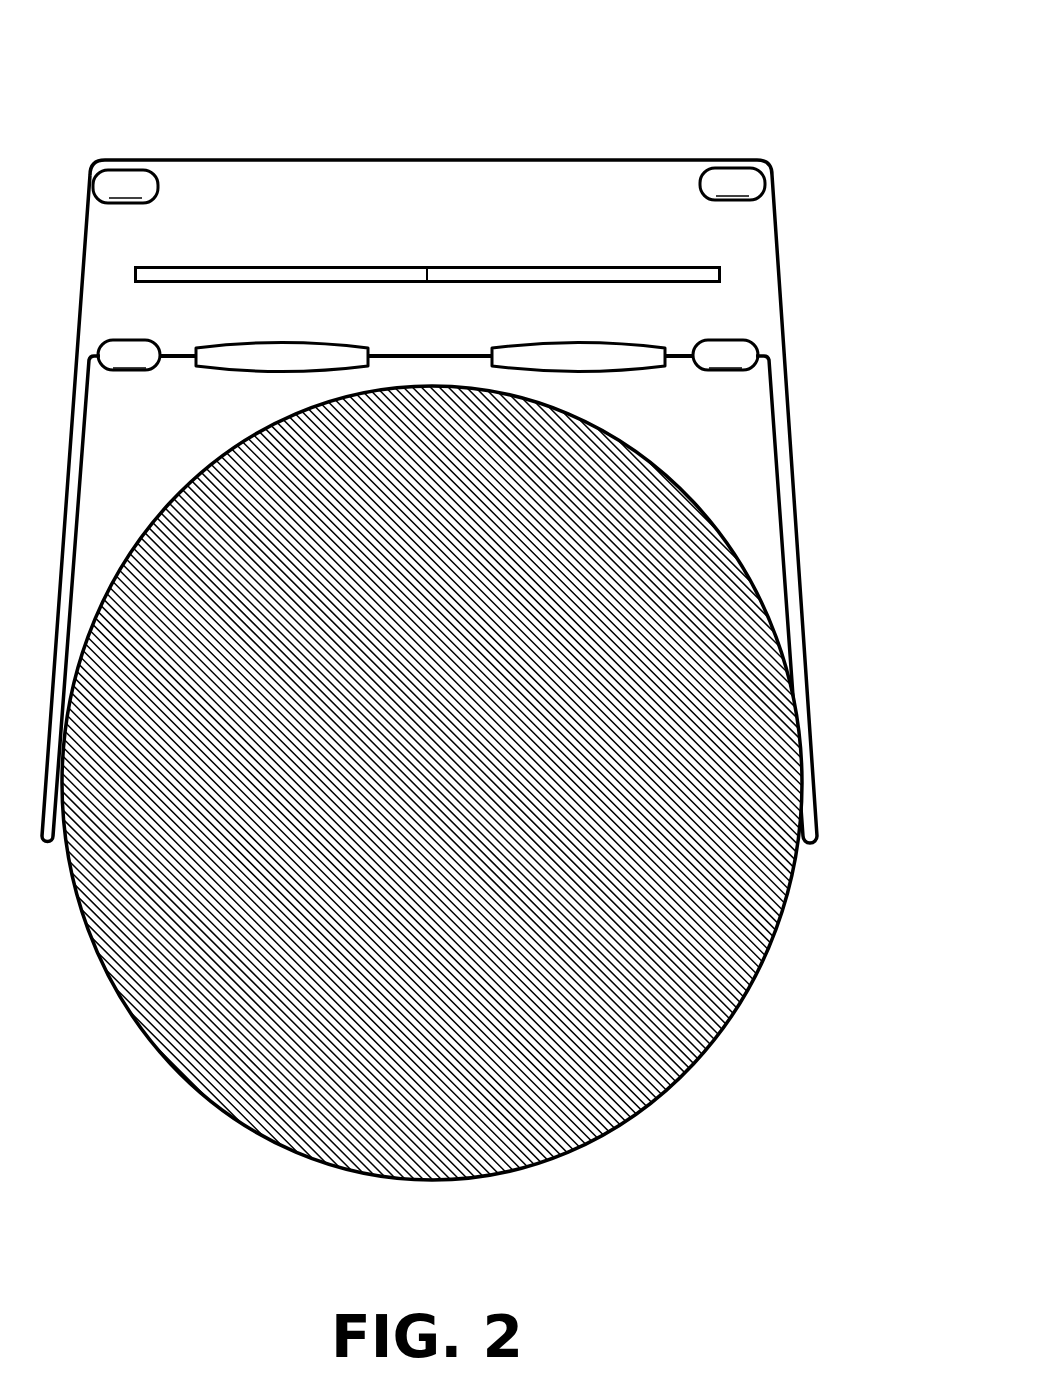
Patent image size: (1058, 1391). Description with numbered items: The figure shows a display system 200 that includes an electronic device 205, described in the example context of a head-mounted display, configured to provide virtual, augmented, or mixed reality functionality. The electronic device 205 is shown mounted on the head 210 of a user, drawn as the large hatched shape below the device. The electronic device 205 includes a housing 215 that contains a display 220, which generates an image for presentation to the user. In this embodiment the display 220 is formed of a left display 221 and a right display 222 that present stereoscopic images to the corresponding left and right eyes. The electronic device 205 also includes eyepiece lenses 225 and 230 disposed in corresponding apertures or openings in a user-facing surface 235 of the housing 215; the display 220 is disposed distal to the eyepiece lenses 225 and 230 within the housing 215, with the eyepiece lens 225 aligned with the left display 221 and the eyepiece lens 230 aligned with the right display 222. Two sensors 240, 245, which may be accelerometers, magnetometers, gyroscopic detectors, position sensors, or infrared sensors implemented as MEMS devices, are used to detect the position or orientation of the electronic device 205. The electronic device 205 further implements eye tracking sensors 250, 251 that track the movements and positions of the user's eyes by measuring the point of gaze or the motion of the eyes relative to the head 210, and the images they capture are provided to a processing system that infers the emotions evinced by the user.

The display system 200 is at (834, 50).
The electronic device 205 is at (417, 471).
The head 210 is at (157, 1050).
The housing 215 is at (77, 311).
The display 220 is at (427, 265).
The left display 221 is at (158, 286).
The right display 222 is at (700, 286).
The eyepiece lens 225 is at (229, 375).
The eyepiece lens 230 is at (620, 375).
The user-facing surface 235 is at (430, 353).
The sensor 240 is at (125, 186).
The sensor 245 is at (732, 184).
The eye tracking sensor 250 is at (711, 355).
The eye tracking sensor 251 is at (147, 355).